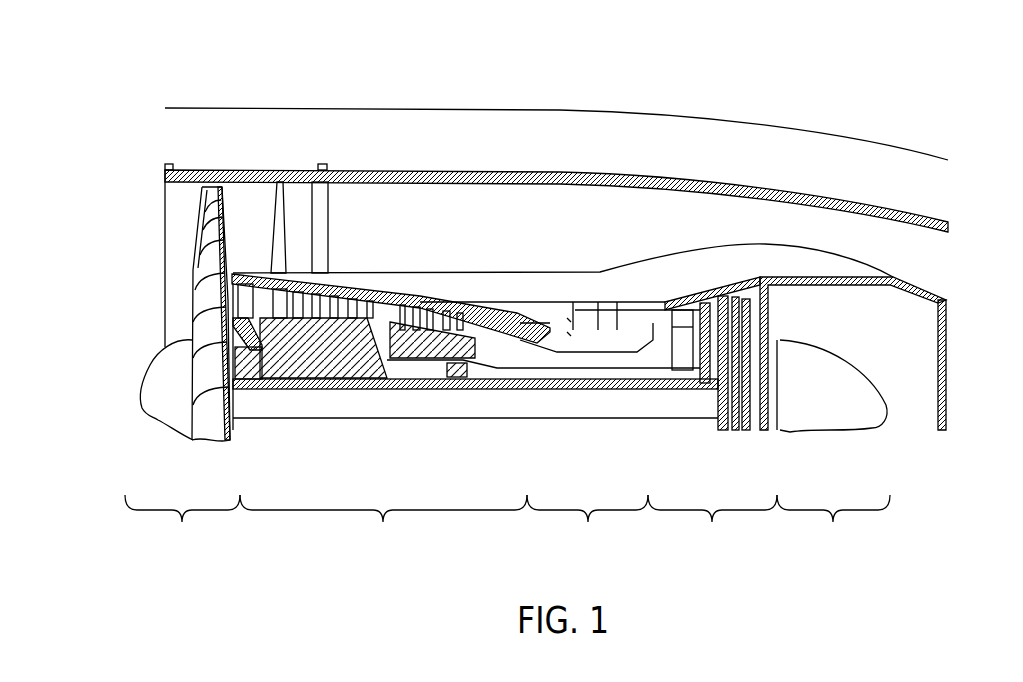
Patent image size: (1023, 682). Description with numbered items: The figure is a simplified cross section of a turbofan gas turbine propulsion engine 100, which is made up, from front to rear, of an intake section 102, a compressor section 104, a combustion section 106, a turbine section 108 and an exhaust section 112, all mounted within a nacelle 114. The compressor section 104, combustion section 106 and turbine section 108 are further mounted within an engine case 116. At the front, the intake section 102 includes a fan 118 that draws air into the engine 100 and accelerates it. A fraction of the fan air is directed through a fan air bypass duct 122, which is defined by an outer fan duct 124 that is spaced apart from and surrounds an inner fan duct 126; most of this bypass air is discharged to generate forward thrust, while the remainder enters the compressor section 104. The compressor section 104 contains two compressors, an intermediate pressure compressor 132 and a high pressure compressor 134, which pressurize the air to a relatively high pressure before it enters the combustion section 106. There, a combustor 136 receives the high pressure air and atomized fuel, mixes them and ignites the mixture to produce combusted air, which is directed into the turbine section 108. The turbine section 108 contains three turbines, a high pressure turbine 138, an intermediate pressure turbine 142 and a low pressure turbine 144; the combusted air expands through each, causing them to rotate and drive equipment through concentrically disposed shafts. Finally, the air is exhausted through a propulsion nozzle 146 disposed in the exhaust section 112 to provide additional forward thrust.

The turbofan gas turbine propulsion engine 100 is at (368, 90).
The intake section 102 is at (182, 524).
The compressor section 104 is at (383, 524).
The combustion section 106 is at (587, 524).
The turbine section 108 is at (712, 524).
The exhaust section 112 is at (833, 524).
The nacelle 114 is at (818, 125).
The engine case 116 is at (253, 282).
The fan 118 is at (196, 272).
The fan air bypass duct 122 is at (403, 237).
The outer fan duct 124 is at (256, 170).
The inner fan duct 126 is at (548, 272).
The intermediate pressure compressor 132 is at (334, 384).
The high pressure compressor 134 is at (480, 380).
The combustor 136 is at (637, 303).
The high pressure turbine 138 is at (665, 316).
The intermediate pressure turbine 142 is at (716, 300).
The low pressure turbine 144 is at (771, 303).
The propulsion nozzle 146 is at (940, 360).